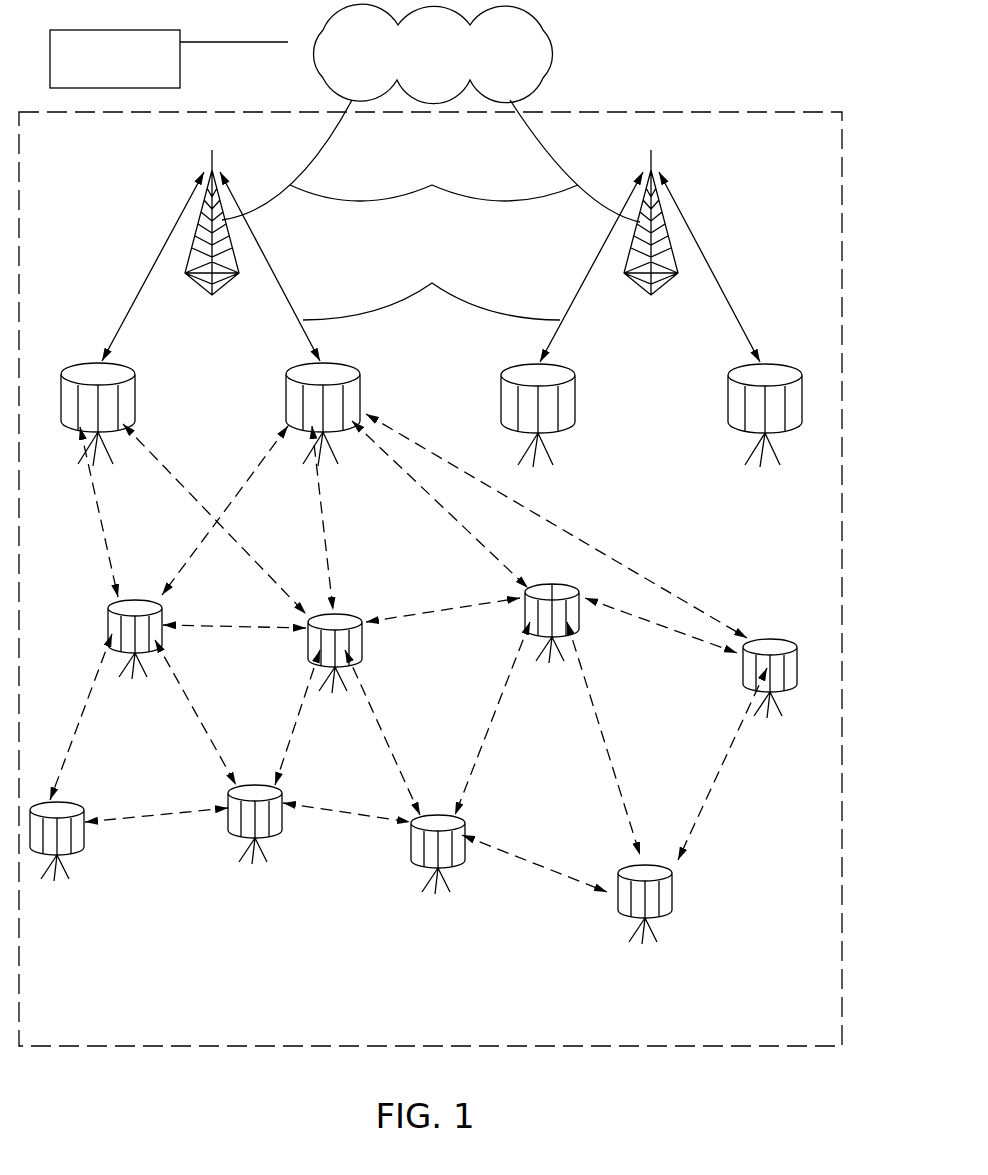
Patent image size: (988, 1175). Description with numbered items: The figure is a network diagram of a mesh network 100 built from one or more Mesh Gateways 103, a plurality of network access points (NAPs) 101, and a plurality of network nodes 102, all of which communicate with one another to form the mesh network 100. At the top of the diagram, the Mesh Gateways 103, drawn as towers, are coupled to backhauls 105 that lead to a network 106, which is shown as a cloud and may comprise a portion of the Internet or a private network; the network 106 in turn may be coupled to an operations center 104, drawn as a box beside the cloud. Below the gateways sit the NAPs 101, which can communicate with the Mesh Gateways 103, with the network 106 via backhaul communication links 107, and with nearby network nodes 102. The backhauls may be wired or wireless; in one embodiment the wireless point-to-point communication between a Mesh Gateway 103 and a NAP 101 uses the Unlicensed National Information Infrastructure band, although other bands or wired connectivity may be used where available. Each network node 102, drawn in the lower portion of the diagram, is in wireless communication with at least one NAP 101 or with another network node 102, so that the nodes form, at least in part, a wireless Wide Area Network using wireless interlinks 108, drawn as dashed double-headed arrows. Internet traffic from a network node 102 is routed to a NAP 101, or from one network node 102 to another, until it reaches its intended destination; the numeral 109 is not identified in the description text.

The mesh network 100 is at (622, 112).
The network access point 101 is at (431, 426).
The network node 102 is at (414, 776).
The Mesh Gateway 103 is at (431, 256).
The operations center 104 is at (97, 86).
The backhaul 105 is at (431, 161).
The network 106 is at (413, 67).
The backhaul communication link 107 is at (431, 285).
The wireless interlink 108 is at (100, 521).
The mesh network 109 is at (80, 590).